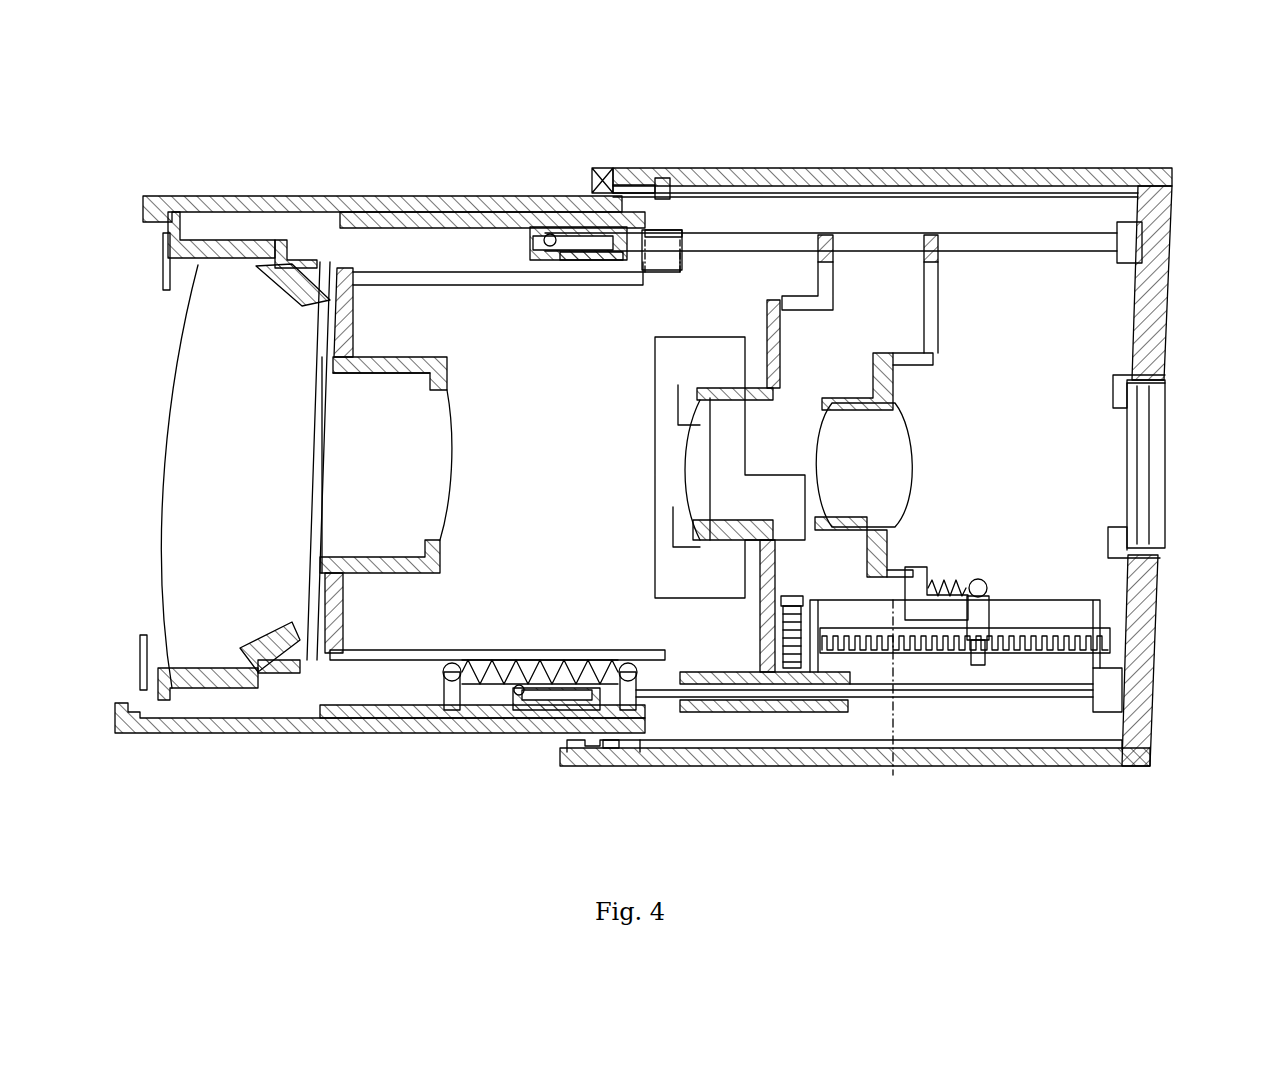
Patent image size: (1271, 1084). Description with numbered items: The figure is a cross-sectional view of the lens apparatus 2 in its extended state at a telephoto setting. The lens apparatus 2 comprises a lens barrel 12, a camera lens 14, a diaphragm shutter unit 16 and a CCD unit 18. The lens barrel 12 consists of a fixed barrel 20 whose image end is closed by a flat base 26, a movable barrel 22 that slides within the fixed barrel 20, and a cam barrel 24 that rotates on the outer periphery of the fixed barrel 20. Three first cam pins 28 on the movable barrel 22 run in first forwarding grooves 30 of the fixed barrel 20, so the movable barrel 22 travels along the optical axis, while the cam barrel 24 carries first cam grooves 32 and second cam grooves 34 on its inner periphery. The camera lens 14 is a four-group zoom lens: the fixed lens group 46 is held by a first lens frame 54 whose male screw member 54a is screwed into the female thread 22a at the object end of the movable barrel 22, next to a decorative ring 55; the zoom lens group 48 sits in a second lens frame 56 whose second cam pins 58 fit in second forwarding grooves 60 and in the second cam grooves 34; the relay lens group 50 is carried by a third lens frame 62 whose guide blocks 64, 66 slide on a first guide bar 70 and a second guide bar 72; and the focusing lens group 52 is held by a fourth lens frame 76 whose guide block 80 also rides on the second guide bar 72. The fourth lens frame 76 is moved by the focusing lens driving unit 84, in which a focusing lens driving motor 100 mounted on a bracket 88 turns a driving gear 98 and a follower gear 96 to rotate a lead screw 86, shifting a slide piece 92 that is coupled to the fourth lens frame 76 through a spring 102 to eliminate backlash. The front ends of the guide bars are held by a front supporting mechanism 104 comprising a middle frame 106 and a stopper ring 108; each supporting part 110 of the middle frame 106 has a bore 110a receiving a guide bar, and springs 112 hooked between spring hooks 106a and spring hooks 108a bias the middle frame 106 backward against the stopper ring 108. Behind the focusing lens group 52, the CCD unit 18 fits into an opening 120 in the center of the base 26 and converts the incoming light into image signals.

The lens apparatus 2 is at (206, 156).
The lens barrel 12 is at (965, 166).
The camera lens 14 is at (145, 510).
The diaphragm shutter unit 16 is at (636, 344).
The CCD unit 18 is at (1165, 425).
The fixed barrel 20 is at (830, 180).
The movable barrel 22 is at (385, 207).
The female thread 22a is at (286, 300).
The cam barrel 24 is at (902, 174).
The base 26 is at (1165, 290).
The first cam pin 28 is at (632, 755).
The first forwarding groove 30 is at (755, 760).
The first cam groove 32 is at (618, 750).
The second cam groove 34 is at (630, 178).
The fixed lens group 46 is at (178, 402).
The zoom lens group 48 is at (318, 462).
The relay lens group 50 is at (688, 462).
The focusing lens group 52 is at (916, 464).
The first lens frame 54 is at (230, 248).
The male screw member 54a is at (288, 250).
The decorative ring 55 is at (163, 272).
The second lens frame 56 is at (433, 354).
The second cam pin 58 is at (672, 190).
The second forwarding groove 60 is at (775, 190).
The third lens frame 62 is at (745, 335).
The guide block 64 is at (795, 712).
The guide block 66 is at (828, 245).
The first guide bar 70 is at (940, 690).
The second guide bar 72 is at (1040, 240).
The fourth lens frame 76 is at (893, 385).
The guide block 80 is at (930, 245).
The focusing lens driving unit 84 is at (1045, 594).
The lead screw 86 is at (1040, 652).
The bracket 88 is at (1092, 692).
The slide piece 92 is at (978, 662).
The follower gear 96 is at (800, 606).
The driving gear 98 is at (790, 598).
The focusing lens driving motor 100 is at (880, 660).
The spring 102 is at (948, 582).
The front supporting mechanism 104 is at (422, 636).
The middle frame 106 is at (462, 220).
The spring hook 106a is at (460, 664).
The stopper ring 108 is at (680, 221).
The spring hook 108a is at (690, 672).
The supporting part 110 is at (575, 236).
The bore 110a is at (548, 233).
The spring 112 is at (570, 656).
The opening 120 is at (1168, 392).